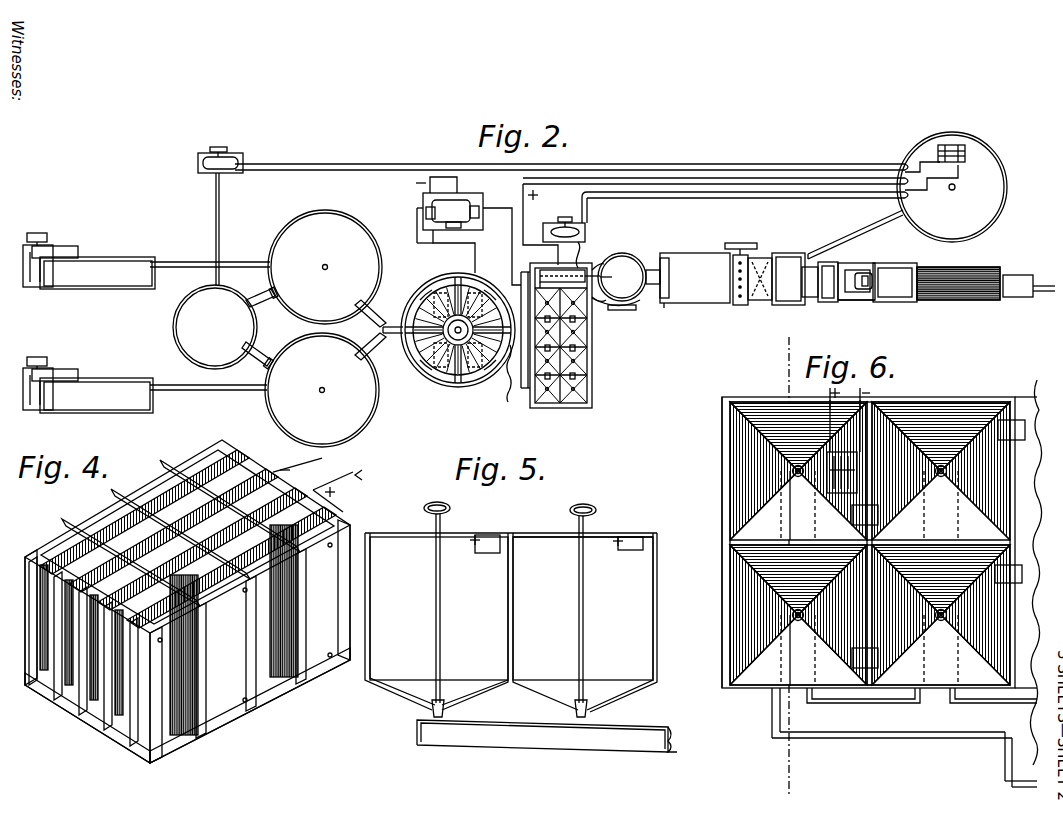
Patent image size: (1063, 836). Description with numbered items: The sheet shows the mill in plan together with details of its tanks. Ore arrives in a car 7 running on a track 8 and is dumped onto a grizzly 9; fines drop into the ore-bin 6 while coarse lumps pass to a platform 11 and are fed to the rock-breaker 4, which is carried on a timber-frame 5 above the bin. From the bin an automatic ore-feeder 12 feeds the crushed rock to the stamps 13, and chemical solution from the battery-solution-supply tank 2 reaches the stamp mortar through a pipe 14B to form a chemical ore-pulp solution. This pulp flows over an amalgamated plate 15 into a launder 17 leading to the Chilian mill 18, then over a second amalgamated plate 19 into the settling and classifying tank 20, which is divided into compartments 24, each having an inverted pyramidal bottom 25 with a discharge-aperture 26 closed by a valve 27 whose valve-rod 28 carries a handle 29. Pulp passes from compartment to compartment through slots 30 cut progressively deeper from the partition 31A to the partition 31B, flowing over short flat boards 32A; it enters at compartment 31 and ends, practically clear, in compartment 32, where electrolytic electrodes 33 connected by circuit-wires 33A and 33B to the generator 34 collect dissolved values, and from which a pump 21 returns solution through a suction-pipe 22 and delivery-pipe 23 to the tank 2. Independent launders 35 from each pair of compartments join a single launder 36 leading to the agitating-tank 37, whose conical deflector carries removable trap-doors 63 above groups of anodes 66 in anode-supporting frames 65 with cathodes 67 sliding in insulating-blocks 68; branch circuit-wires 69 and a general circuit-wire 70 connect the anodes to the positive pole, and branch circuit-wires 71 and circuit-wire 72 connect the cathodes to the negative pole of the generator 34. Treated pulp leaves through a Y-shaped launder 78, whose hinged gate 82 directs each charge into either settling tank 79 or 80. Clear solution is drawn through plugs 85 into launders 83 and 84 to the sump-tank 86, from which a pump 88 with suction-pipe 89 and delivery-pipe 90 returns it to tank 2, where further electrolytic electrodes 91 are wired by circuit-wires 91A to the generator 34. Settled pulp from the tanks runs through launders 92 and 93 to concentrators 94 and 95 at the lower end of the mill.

In FIG. 2, the battery-solution-supply tank 2 is at (1005, 200).
In FIG. 2, the rock-breaker 4 is at (858, 292).
In FIG. 2, the timber-frame 5 is at (840, 300).
In FIG. 6, the timber-frame 5 is at (786, 569).
In FIG. 2, the ore-bin 6 is at (832, 268).
In FIG. 2, the car 7 is at (1018, 275).
In FIG. 2, the track 8 is at (1046, 285).
In FIG. 2, the grizzly 9 is at (975, 270).
In FIG. 2, the platform 11 is at (893, 266).
In FIG. 2, the automatic ore-feeder 12 is at (786, 257).
In FIG. 2, the stamps 13 is at (740, 305).
In FIG. 2, the pipe 14B is at (858, 234).
In FIG. 2, the amalgamated plate 15 is at (690, 256).
In FIG. 2, the launder 17 is at (664, 306).
In FIG. 2, the Chilian mill 18 is at (640, 255).
In FIG. 2, the amalgamated plate 19 is at (616, 277).
In FIG. 2, the settling and classifying tank 20 is at (594, 337).
In FIG. 6, the settling and classifying tank 20 is at (720, 557).
In FIG. 2, the pump 21 is at (551, 227).
In FIG. 2, the suction-pipe 22 is at (586, 246).
In FIG. 2, the delivery-pipe 23 is at (736, 198).
In FIG. 2, the compartments 24 is at (590, 389).
In FIG. 6, the compartments 24 is at (1000, 618).
In FIG. 5, the inverted pyramidal bottom 25 is at (397, 701).
In FIG. 5, the discharge-aperture 26 is at (444, 718).
In FIG. 6, the discharge-aperture 26 is at (940, 477).
In FIG. 5, the valve 27 is at (442, 701).
In FIG. 5, the valve-rod 28 is at (441, 615).
In FIG. 5, the handle 29 is at (451, 509).
In FIG. 5, the slots 30 is at (535, 545).
In FIG. 2, the compartment 31 is at (533, 268).
In FIG. 5, the compartment 31 is at (583, 589).
In FIG. 6, the compartment 31 is at (736, 688).
In FIG. 2, the partition 31A is at (544, 272).
In FIG. 6, the partition 31A is at (860, 598).
In FIG. 2, the partition 31B is at (640, 340).
In FIG. 6, the partition 31B is at (802, 505).
In FIG. 2, the compartment 32 is at (598, 259).
In FIG. 5, the compartment 32 is at (634, 551).
In FIG. 6, the compartment 32 is at (727, 449).
In FIG. 2, the short flat board 32A is at (592, 330).
In FIG. 6, the short flat board 32A is at (1003, 435).
In FIG. 2, the electrolytic electrodes 33 is at (638, 313).
In FIG. 6, the electrolytic electrodes 33 is at (850, 455).
In FIG. 2, the circuit-wire 33A is at (518, 246).
In FIG. 6, the circuit-wire 33A is at (823, 392).
In FIG. 2, the circuit-wire 33B is at (417, 234).
In FIG. 6, the circuit-wire 33B is at (870, 393).
In FIG. 2, the electric generator 34 is at (452, 199).
In FIG. 6, the independent launder 35 is at (782, 726).
In FIG. 2, the single launder 36 is at (510, 401).
In FIG. 6, the single launder 36 is at (1003, 760).
In FIG. 2, the agitating-tank 37 is at (451, 386).
In FIG. 2, the trap-doors 63 is at (421, 299).
In FIG. 4, the anode-supporting frames 65 is at (278, 708).
In FIG. 4, the anodes 66 is at (190, 725).
In FIG. 4, the cathodes 67 is at (182, 458).
In FIG. 4, the insulating-blocks 68 is at (32, 689).
In FIG. 4, the branch circuit-wires 69 is at (348, 513).
In FIG. 4, the general circuit-wire 70 is at (363, 476).
In FIG. 2, the branch circuit-wires 71 is at (475, 266).
In FIG. 4, the branch circuit-wires 71 is at (92, 504).
In FIG. 2, the circuit-wire 72 is at (433, 253).
In FIG. 4, the circuit-wire 72 is at (310, 456).
In FIG. 2, the Y-shaped launder 78 is at (388, 323).
In FIG. 2, the ore-pulp-settling tank 79 is at (325, 211).
In FIG. 2, the ore-pulp-settling tank 80 is at (360, 422).
In FIG. 2, the gate 82 is at (380, 330).
In FIG. 2, the launder 83 is at (253, 297).
In FIG. 2, the launder 84 is at (263, 351).
In FIG. 2, the plugs 85 is at (283, 295).
In FIG. 2, the sump-tank 86 is at (185, 327).
In FIG. 2, the pump 88 is at (230, 156).
In FIG. 2, the suction-pipe 89 is at (215, 213).
In FIG. 2, the delivery-pipe 90 is at (345, 163).
In FIG. 2, the electrolytic electrodes 91 is at (953, 145).
In FIG. 2, the circuit-wires 91A is at (800, 177).
In FIG. 2, the launder 92 is at (188, 262).
In FIG. 2, the launder 93 is at (200, 389).
In FIG. 2, the concentrator 94 is at (88, 286).
In FIG. 2, the concentrator 95 is at (105, 386).